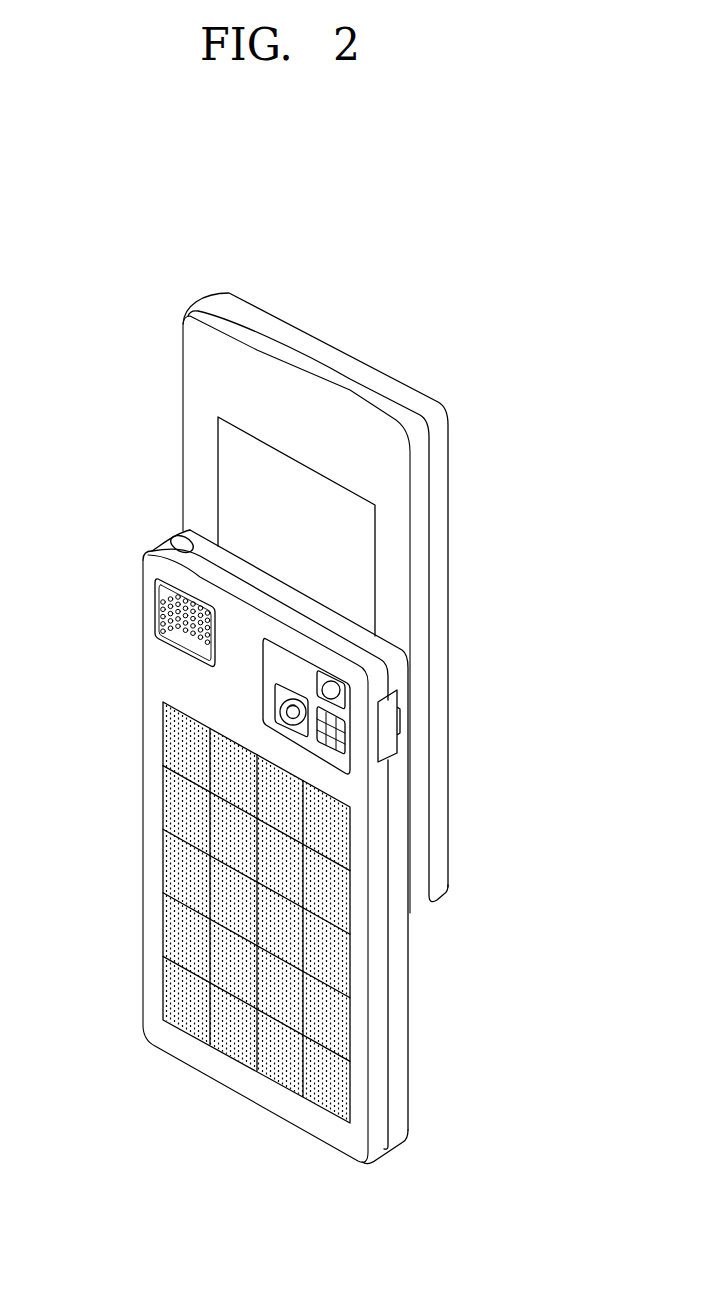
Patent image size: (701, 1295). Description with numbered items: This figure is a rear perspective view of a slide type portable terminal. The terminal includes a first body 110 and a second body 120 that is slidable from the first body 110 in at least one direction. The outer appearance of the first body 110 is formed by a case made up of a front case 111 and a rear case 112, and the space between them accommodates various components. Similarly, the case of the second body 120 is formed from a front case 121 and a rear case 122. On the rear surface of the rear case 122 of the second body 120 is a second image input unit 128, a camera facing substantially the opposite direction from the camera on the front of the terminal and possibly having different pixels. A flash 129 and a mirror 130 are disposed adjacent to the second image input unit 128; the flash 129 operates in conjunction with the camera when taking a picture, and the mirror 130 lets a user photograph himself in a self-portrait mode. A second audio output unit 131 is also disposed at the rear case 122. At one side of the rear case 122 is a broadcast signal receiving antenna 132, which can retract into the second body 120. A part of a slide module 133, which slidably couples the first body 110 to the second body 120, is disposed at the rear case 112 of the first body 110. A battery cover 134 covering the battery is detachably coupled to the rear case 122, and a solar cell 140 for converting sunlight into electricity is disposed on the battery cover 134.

The first body 110 is at (259, 579).
The front case 111 is at (224, 300).
The rear case 112 is at (208, 312).
The second body 120 is at (279, 832).
The front case 121 is at (400, 940).
The rear case 122 is at (410, 913).
The second image input unit 128 is at (391, 710).
The flash 129 is at (338, 748).
The mirror 130 is at (333, 690).
The second audio output unit 131 is at (170, 622).
The broadcast signal receiving antenna 132 is at (174, 542).
The slide module 133 is at (220, 495).
The battery cover 134 is at (152, 879).
The solar cell 140 is at (168, 806).